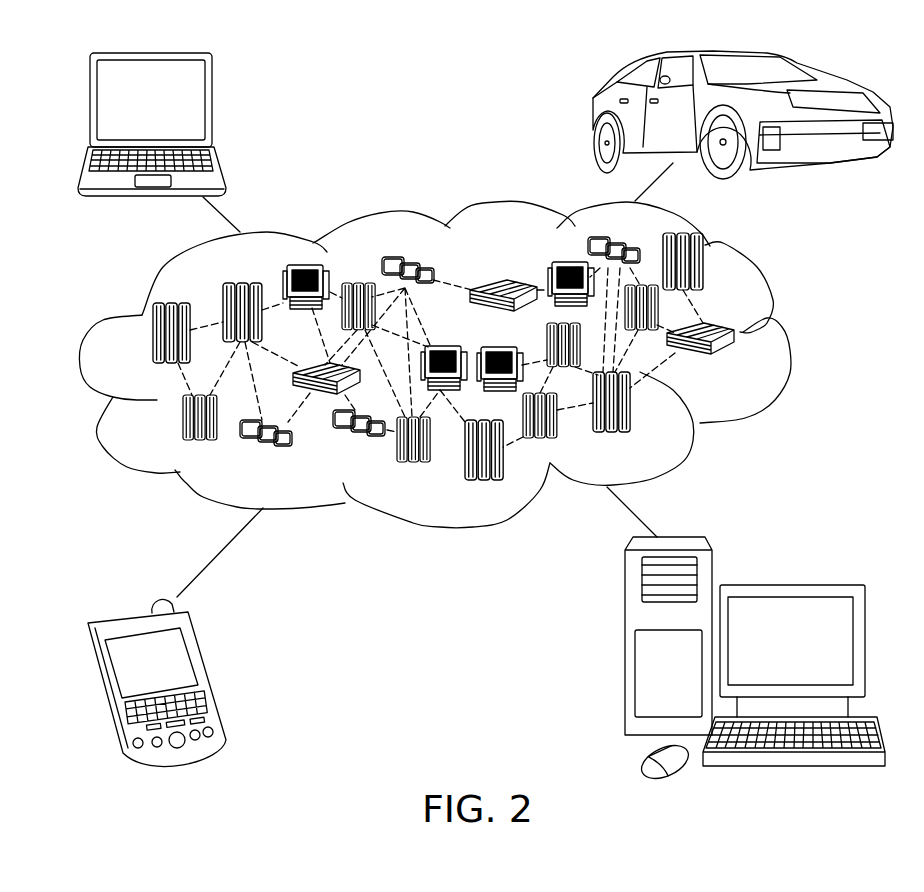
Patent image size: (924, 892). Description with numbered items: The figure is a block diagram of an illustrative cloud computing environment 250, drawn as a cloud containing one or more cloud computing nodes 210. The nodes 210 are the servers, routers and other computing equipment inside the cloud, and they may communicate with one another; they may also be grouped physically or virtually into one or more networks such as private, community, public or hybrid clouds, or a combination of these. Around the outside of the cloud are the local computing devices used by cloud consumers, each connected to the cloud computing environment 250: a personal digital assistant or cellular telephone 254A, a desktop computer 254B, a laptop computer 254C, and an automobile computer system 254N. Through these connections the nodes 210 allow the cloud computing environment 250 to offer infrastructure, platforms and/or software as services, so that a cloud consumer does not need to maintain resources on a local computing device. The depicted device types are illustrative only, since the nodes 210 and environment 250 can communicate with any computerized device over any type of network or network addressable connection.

The cloud computing nodes 210 is at (735, 362).
The cloud computing environment 250 is at (788, 338).
The personal digital assistant (PDA) or cellular telephone 254A is at (203, 675).
The desktop computer 254B is at (792, 586).
The laptop computer 254C is at (214, 104).
The automobile computer system 254N is at (593, 113).